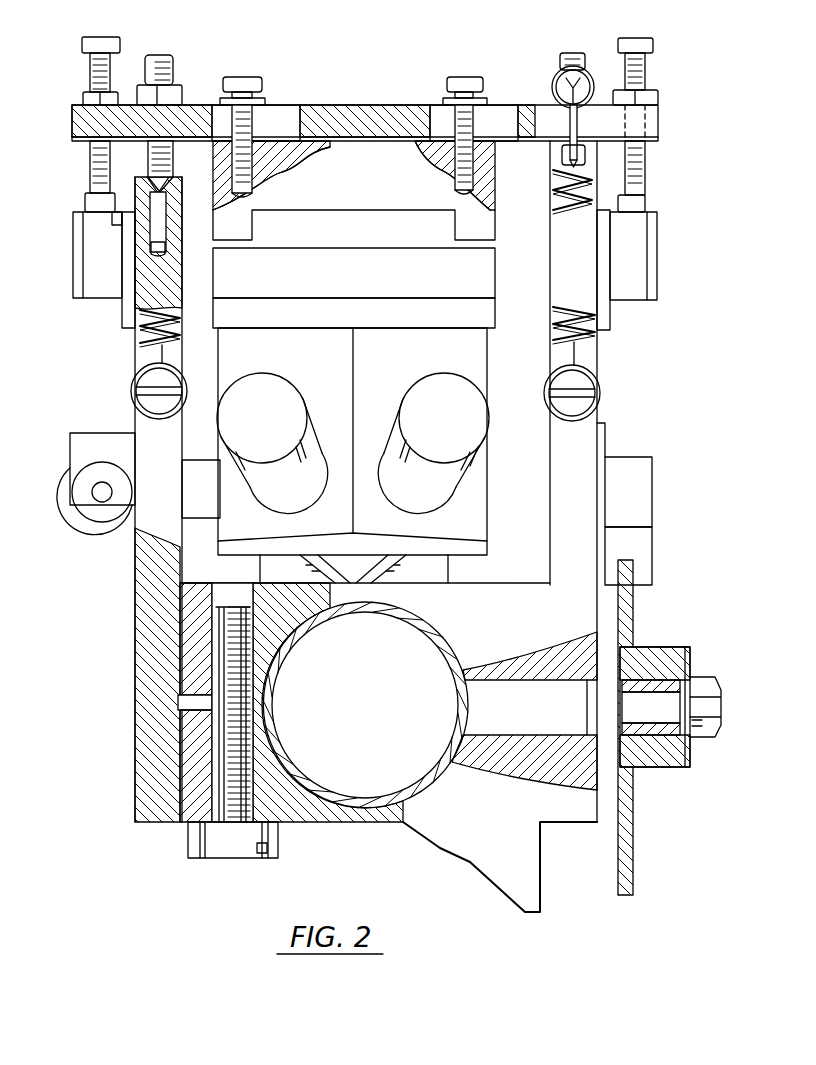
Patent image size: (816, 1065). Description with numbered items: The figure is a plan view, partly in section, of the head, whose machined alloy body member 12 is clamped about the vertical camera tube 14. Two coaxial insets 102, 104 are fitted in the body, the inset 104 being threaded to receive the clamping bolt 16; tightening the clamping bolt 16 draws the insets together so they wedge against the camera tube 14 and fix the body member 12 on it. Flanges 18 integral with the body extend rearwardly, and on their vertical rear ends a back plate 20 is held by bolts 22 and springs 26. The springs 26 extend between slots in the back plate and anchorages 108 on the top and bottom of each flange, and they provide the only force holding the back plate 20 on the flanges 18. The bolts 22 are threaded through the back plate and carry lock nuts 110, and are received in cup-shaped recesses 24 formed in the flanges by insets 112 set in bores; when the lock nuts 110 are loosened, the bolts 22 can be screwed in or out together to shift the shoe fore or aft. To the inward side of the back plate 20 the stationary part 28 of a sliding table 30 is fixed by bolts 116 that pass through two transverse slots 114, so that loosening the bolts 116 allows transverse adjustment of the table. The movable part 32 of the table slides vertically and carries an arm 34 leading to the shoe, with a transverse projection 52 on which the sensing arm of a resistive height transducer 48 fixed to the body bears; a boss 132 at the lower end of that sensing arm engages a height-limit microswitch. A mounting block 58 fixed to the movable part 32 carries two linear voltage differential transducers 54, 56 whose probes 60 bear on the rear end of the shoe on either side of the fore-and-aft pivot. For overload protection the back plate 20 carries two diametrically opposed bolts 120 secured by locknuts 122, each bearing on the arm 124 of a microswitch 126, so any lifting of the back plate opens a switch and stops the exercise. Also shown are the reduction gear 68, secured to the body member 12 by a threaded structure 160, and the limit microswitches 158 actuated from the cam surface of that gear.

The body member 12 is at (312, 812).
The camera tube 14 is at (300, 787).
The clamping bolt 16 is at (227, 802).
The flanges 18 is at (135, 356).
The back plate 20 is at (370, 110).
The bolts 22 is at (160, 58).
The cup-shaped recesses 24 is at (174, 156).
The springs 26 is at (160, 316).
The stationary part 28 is at (386, 153).
The sliding table 30 is at (497, 242).
The movable part 32 is at (493, 285).
The arm 34 is at (493, 315).
The resistive height transducer 48 is at (96, 433).
The transverse projection 52 is at (200, 502).
The linear voltage differential transducer 54 is at (282, 392).
The linear voltage differential transducer 56 is at (430, 385).
The mounting block 58 is at (484, 512).
The probes 60 is at (382, 582).
The reduction gear 68 is at (634, 808).
The inset 102 is at (193, 757).
The inset 104 is at (188, 610).
The anchorages 108 is at (586, 400).
The lock nuts 110 is at (182, 88).
The insets 112 is at (157, 203).
The transverse slots 114 is at (290, 120).
The bolts 116 is at (250, 80).
The bolts 120 is at (100, 45).
The locknuts 122 is at (90, 98).
The arm 124 is at (90, 205).
The microswitch 126 is at (75, 247).
The boss 132 is at (82, 535).
The microswitches 158 is at (642, 480).
The threaded structure 160 is at (724, 686).